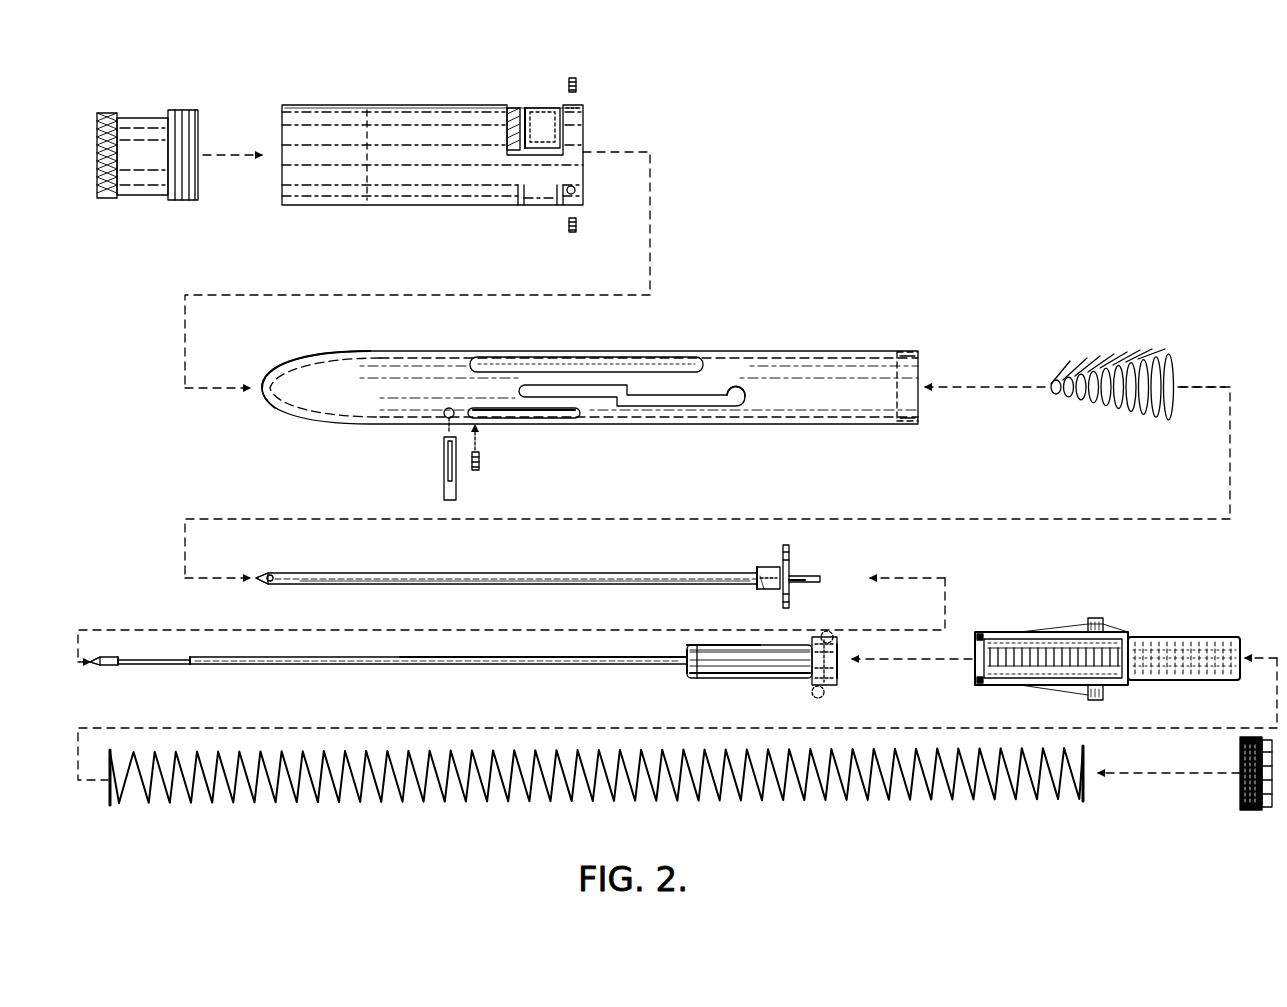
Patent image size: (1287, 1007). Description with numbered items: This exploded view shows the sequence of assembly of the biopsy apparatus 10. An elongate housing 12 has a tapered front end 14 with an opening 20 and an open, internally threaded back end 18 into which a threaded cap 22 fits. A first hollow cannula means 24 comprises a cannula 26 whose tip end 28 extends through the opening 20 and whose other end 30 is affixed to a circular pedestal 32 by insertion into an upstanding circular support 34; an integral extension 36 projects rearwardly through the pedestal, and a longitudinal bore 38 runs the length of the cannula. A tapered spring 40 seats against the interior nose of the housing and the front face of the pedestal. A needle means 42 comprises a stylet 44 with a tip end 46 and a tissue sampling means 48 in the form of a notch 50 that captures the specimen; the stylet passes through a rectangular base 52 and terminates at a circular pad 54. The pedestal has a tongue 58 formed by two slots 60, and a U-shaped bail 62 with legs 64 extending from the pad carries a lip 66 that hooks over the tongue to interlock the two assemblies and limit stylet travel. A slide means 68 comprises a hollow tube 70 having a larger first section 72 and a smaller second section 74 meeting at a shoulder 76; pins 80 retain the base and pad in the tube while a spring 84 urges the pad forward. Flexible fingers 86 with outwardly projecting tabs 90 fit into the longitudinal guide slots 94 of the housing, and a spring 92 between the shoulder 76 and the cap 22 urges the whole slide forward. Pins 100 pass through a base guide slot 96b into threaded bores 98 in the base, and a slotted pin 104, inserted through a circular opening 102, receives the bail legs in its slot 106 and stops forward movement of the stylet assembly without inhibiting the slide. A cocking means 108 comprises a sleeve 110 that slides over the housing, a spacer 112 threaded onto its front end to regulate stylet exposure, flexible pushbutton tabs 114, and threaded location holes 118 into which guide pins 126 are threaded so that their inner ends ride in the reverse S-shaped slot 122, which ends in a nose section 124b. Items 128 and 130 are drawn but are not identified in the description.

The apparatus 10 is at (1000, 276).
The elongate housing 12 is at (860, 322).
The tapered front end 14 is at (288, 362).
The open back end 18 is at (908, 352).
The opening 20 is at (268, 388).
The threaded cap 22 is at (1248, 800).
The first hollow cannula means 24 is at (958, 585).
The hollow needle or cannula 26 is at (552, 575).
The tip end 28 is at (266, 574).
The other end of the cannula 30 is at (637, 575).
The circular pedestal 32 is at (777, 592).
The upstanding circular support 34 is at (768, 567).
The integral extension of the needle 36 is at (805, 577).
The longitudinal bore 38 is at (269, 582).
The spring 40 is at (1090, 368).
The needle means 42 is at (362, 675).
The stylet 44 is at (525, 666).
The tip end 46 is at (95, 664).
The tissue sampling means 48 is at (170, 658).
The recess or notch 50 is at (190, 652).
The base 52 is at (811, 682).
The pad 54 is at (840, 680).
The tongue portion 58 is at (792, 581).
The slots 60 is at (789, 558).
The bail 62 is at (682, 670).
The legs 64 is at (790, 587).
The lip 66 is at (690, 647).
The slide means 68 is at (1112, 643).
The cylindrical hollow tube 70 is at (1112, 615).
The first section 72 is at (1010, 635).
The second section 74 is at (1210, 637).
The shoulder 76 is at (1129, 636).
The pins 80 is at (975, 652).
The spring 84 is at (1046, 655).
The flexible fingers 86 is at (1082, 688).
The outwardly projecting tab 90 is at (1095, 618).
The spring 92 is at (806, 800).
The longitudinal guide slots 94 is at (530, 357).
The base guide slot 96b is at (555, 418).
The threaded bores 98 is at (833, 632).
The pins 100 is at (481, 462).
The circular opening 102 is at (441, 417).
The slotted pin 104 is at (444, 494).
The longitudinal slot 106 is at (445, 462).
The cocking means 108 is at (403, 95).
The hollow cylindric sleeve 110 is at (330, 105).
The spacer 112 is at (163, 82).
The flexible tabs 114 is at (536, 115).
The threaded location holes 118 is at (583, 108).
The slot 122 is at (640, 385).
The nose section 124b is at (742, 389).
The guide pins 126 is at (578, 85).
The slot edge 128 is at (525, 112).
The slot wall 130 is at (510, 118).